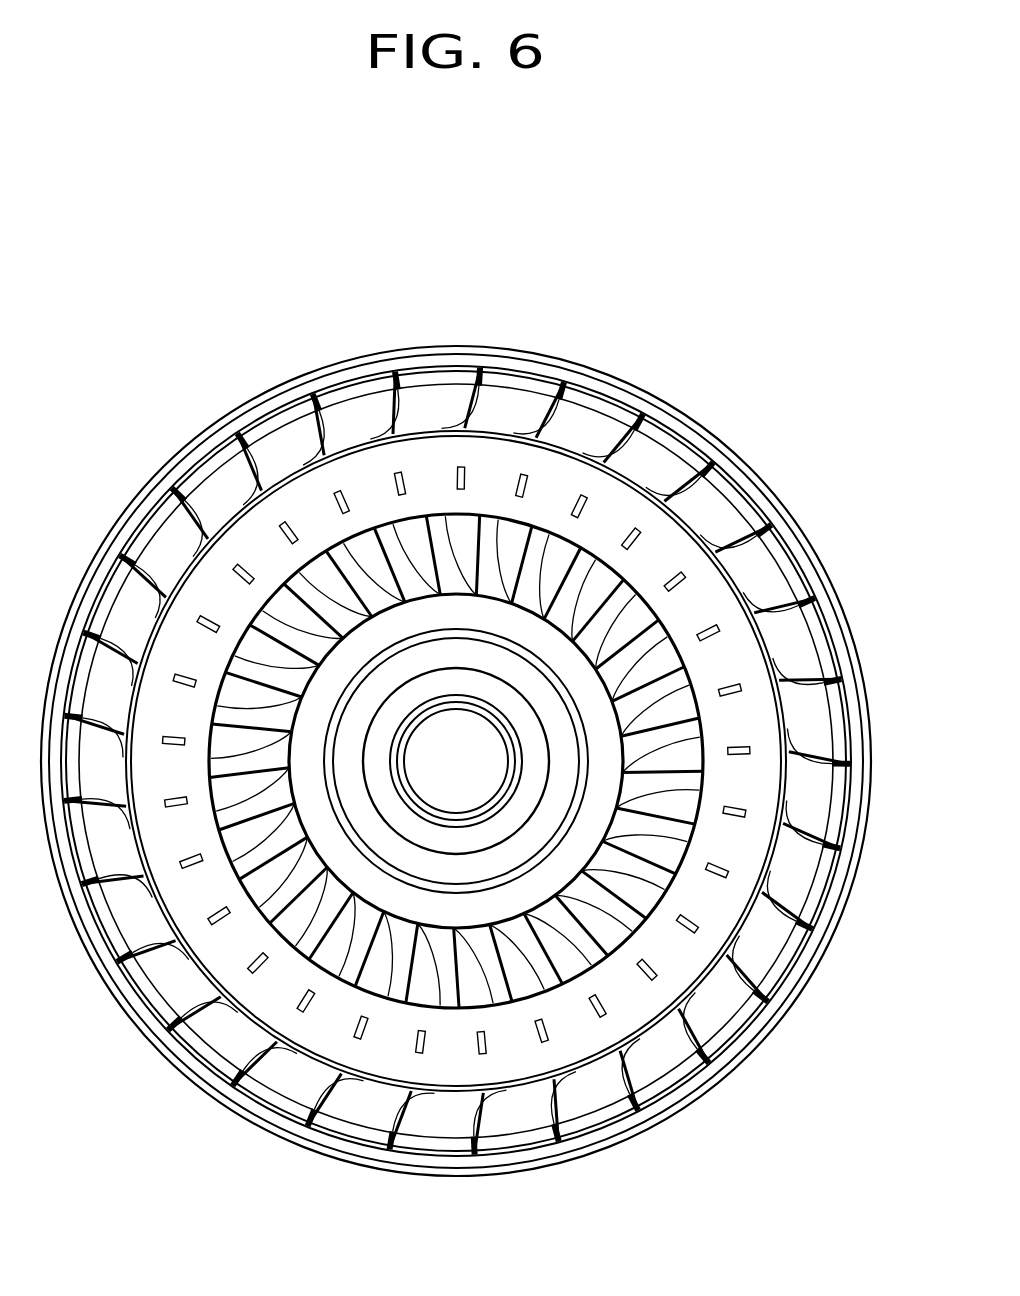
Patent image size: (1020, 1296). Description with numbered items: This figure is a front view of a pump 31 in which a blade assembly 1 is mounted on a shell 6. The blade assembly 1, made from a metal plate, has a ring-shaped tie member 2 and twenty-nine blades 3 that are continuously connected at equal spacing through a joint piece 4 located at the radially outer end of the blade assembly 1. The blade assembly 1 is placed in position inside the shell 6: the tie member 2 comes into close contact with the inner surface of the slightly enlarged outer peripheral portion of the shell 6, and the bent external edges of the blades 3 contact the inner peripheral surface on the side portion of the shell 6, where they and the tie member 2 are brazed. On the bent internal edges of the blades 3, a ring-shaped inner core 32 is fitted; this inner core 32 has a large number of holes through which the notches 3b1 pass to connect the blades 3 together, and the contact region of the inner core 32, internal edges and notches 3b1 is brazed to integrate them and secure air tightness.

The blade assembly 1 is at (614, 383).
The tie member 2 is at (681, 436).
The blade 3 is at (458, 407).
The pump 31 is at (158, 458).
The inner core 32 is at (709, 597).
The notch 3b1 is at (731, 684).
The joint piece 4 is at (722, 483).
The shell 6 is at (773, 1022).